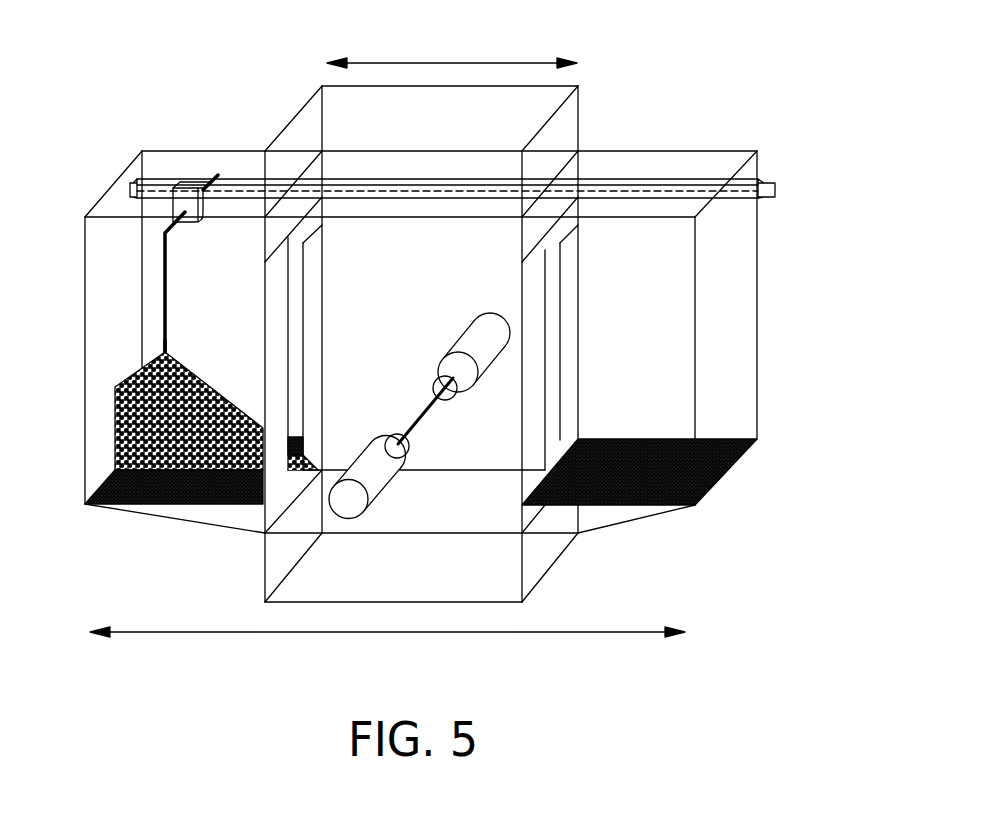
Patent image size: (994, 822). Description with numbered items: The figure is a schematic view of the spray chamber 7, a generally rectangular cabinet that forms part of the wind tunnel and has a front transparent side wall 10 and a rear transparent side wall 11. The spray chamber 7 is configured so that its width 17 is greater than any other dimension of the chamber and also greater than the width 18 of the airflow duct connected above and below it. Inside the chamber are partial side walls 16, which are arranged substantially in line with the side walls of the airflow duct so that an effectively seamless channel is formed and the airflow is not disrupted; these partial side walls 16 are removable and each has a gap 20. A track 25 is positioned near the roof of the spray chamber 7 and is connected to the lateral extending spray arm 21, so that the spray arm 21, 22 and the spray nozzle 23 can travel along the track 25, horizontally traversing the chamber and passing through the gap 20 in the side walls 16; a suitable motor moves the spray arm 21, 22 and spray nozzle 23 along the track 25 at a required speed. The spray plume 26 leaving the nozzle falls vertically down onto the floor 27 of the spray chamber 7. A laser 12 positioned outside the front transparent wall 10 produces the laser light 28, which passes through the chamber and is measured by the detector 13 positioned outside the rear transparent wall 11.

The spray chamber 7 is at (85, 325).
The front transparent side wall 10 is at (495, 524).
The rear transparent side wall 11 is at (592, 140).
The laser 12 is at (387, 487).
The detector 13 is at (453, 346).
The partial side walls 16 is at (305, 270).
The width of the spray chamber 17 is at (410, 633).
The width of the airflow duct 18 is at (453, 62).
The gap 20 is at (290, 304).
The lateral extending spray arm 21 is at (172, 224).
The spray arm 22 is at (163, 283).
The spray nozzle 23 is at (163, 352).
The track 25 is at (778, 189).
The spray plume 26 is at (120, 433).
The floor 27 is at (107, 488).
The laser light 28 is at (432, 405).